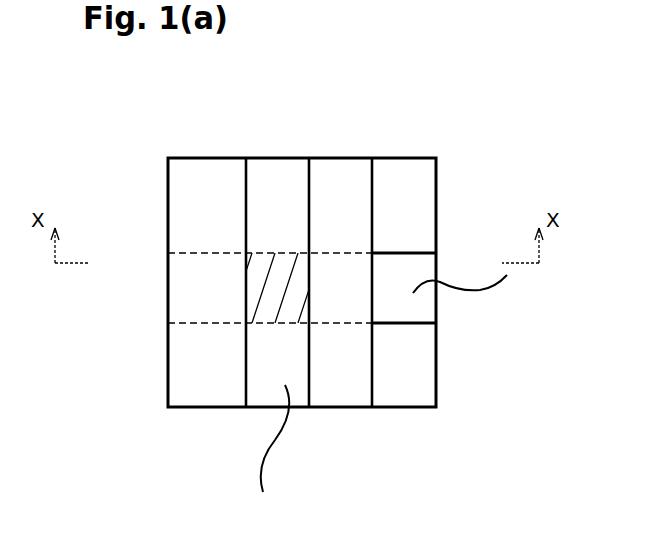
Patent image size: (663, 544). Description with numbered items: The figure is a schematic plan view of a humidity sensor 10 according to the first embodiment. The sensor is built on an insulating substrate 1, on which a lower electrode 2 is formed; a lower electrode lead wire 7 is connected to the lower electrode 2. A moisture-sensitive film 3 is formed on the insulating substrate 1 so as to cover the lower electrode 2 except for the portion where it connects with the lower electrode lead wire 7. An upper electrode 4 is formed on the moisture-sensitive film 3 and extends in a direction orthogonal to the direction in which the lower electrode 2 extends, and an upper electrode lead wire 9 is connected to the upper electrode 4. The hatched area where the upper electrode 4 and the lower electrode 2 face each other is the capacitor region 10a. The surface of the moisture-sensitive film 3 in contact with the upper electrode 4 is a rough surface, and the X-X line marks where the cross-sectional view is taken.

The humidity sensor 10 is at (472, 126).
The upper electrode 4 is at (275, 167).
The moisture-sensitive film 3 is at (180, 388).
The insulating substrate 1 is at (427, 388).
The lower electrode 2 is at (430, 312).
The capacitor region 10a is at (275, 294).
The lower electrode lead wire 7 is at (500, 285).
The upper electrode lead wire 9 is at (262, 475).